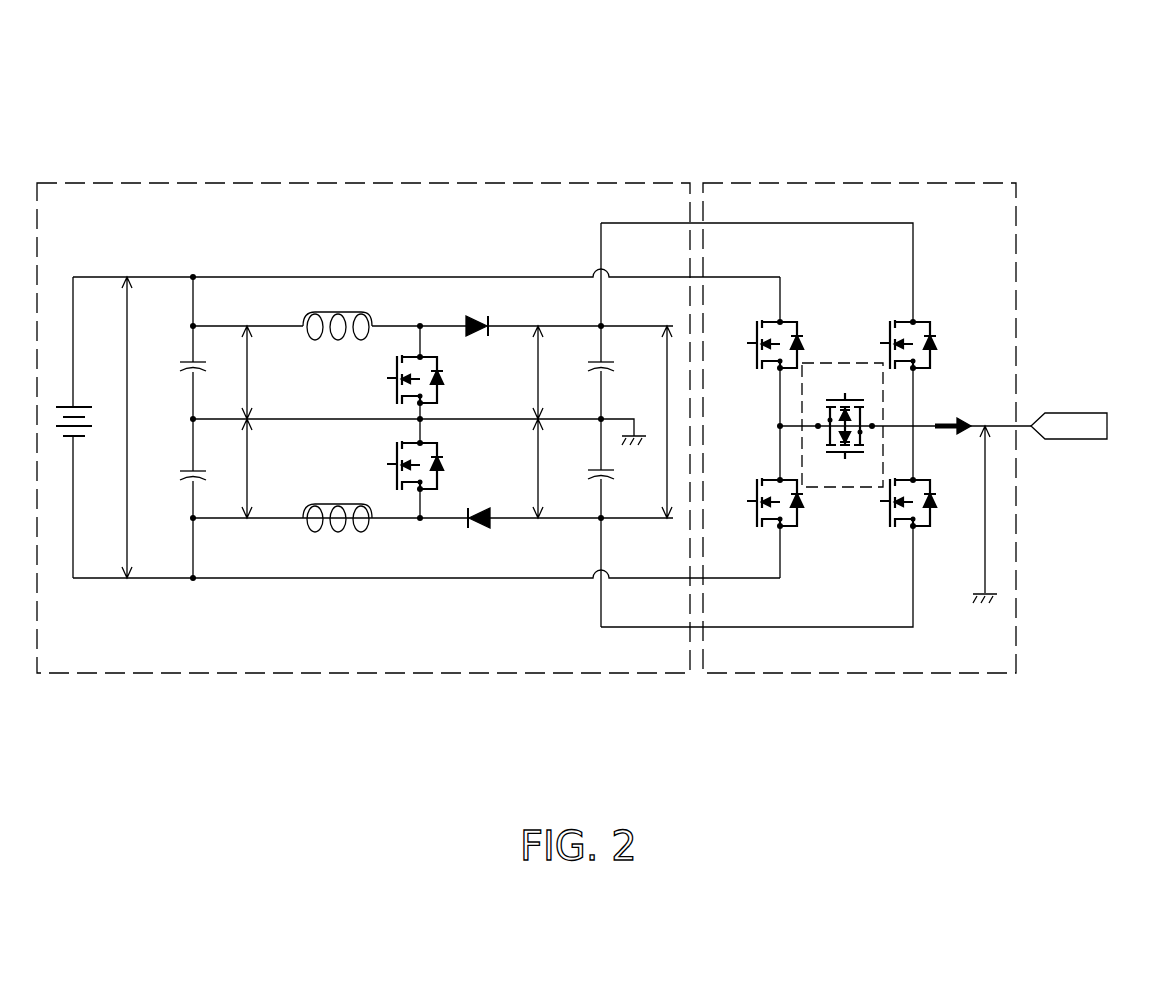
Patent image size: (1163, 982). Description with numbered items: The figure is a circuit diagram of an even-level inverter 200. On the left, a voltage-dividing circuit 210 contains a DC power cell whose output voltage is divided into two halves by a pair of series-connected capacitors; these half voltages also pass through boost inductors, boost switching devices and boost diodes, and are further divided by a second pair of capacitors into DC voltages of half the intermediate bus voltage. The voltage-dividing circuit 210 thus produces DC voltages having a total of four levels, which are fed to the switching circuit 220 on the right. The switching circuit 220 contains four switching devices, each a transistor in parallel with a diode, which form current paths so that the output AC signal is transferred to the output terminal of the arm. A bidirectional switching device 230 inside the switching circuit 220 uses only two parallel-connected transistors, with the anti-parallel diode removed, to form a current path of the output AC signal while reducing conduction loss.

The even-level inverter 200 is at (964, 128).
The voltage-dividing circuit 210 is at (406, 673).
The switching circuit 220 is at (1016, 240).
The bidirectional switching device 230 is at (883, 393).